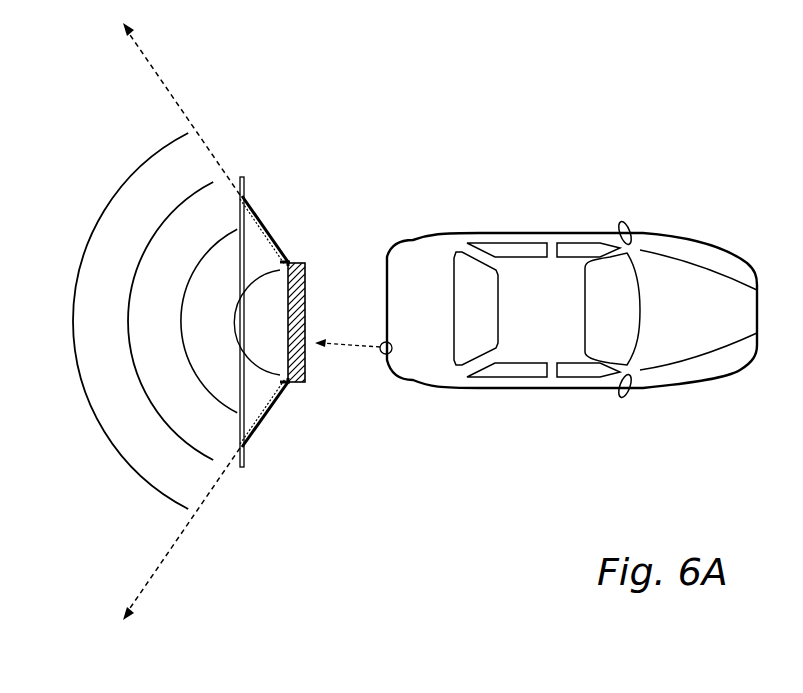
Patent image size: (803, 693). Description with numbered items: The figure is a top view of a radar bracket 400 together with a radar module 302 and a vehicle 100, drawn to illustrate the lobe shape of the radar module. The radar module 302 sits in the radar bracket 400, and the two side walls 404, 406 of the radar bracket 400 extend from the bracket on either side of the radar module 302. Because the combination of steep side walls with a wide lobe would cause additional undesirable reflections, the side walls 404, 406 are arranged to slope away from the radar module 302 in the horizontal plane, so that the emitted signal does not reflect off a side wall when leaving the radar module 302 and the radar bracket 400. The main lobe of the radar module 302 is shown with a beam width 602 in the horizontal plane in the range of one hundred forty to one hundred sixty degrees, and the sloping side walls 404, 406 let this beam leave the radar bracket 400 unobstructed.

The vehicle 100 is at (728, 172).
The radar module 302 is at (305, 285).
The radar bracket 400 is at (243, 177).
The side wall 404 is at (275, 402).
The side wall 406 is at (259, 220).
The beam width 602 is at (110, 182).